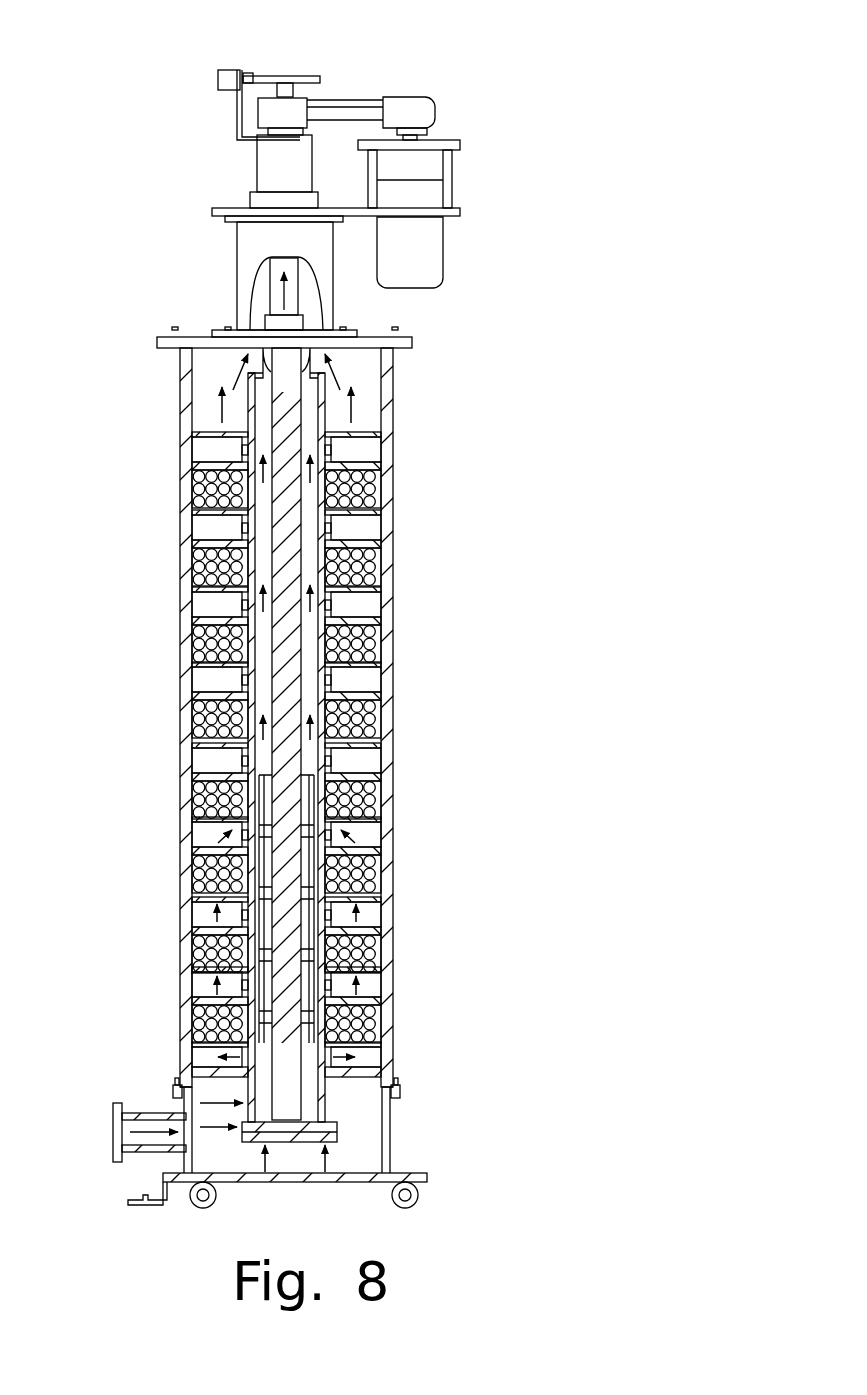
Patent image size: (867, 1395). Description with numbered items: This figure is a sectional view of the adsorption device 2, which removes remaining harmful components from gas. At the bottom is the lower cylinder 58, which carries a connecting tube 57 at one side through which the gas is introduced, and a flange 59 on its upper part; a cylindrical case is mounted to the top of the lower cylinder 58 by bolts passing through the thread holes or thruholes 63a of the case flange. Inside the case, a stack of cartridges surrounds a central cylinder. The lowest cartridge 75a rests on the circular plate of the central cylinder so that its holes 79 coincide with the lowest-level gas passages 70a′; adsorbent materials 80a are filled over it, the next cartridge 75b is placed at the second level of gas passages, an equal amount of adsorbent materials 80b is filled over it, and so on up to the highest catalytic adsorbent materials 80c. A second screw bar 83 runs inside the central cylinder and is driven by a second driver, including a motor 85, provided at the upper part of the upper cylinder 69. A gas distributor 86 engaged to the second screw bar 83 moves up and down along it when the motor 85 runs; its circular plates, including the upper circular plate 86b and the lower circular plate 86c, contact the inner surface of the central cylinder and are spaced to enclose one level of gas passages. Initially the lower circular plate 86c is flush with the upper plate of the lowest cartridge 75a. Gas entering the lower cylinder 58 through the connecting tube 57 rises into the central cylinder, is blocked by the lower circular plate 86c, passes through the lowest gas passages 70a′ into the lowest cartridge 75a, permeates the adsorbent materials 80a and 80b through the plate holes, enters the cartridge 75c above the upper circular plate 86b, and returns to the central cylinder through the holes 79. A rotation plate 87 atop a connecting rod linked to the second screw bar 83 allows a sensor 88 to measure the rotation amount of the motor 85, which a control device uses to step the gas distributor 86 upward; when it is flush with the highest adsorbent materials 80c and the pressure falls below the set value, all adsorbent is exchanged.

The adsorption device 2 is at (353, 144).
The connecting tube 57 is at (115, 1150).
The lower cylinder 58 is at (392, 1147).
The flange 59 is at (402, 1092).
The thread holes or thruholes 63a is at (173, 1085).
The upper cylinder 69 is at (254, 250).
The gas passages of lowest level 70a′ is at (267, 1120).
The lowest cartridge 75a is at (378, 1046).
The next cartridge 75b is at (382, 968).
The cartridge 75c is at (191, 902).
The holes 79 is at (394, 1073).
The adsorbent materials 80a is at (200, 1022).
The adsorbent materials 80b is at (378, 947).
The highest catalytic adsorbent materials 80c is at (378, 490).
The second screw bar 83 is at (302, 545).
The motor 85 is at (424, 256).
The gas distributor 86 is at (312, 948).
The upper circular plate 86b is at (380, 860).
The lower circular plate 86c is at (378, 1013).
The rotation plate 87 is at (300, 76).
The sensor 88 is at (218, 80).